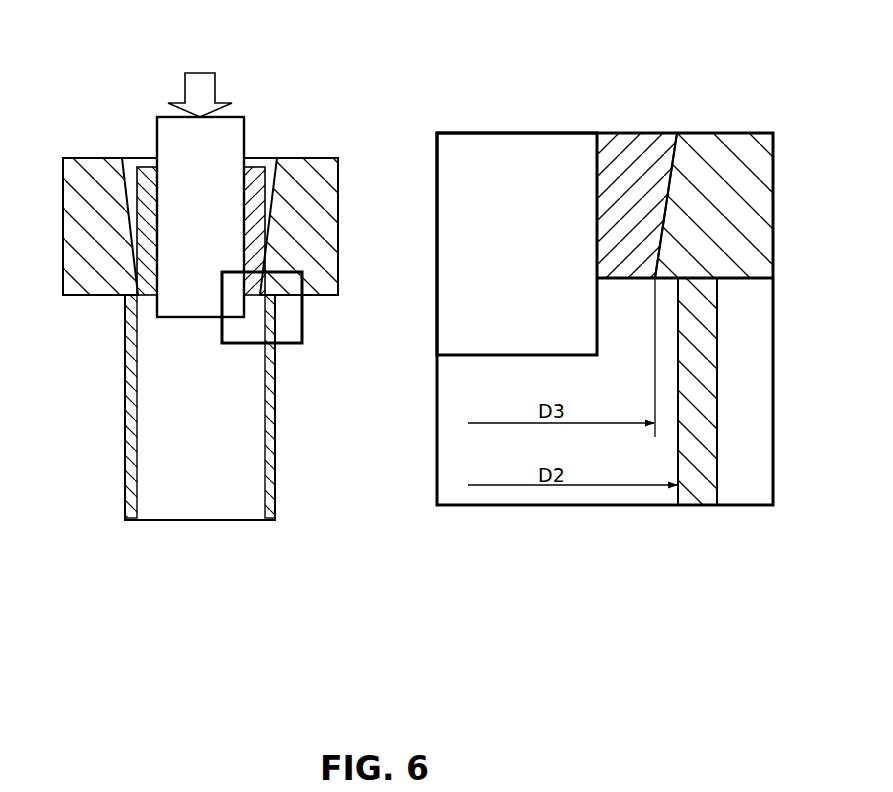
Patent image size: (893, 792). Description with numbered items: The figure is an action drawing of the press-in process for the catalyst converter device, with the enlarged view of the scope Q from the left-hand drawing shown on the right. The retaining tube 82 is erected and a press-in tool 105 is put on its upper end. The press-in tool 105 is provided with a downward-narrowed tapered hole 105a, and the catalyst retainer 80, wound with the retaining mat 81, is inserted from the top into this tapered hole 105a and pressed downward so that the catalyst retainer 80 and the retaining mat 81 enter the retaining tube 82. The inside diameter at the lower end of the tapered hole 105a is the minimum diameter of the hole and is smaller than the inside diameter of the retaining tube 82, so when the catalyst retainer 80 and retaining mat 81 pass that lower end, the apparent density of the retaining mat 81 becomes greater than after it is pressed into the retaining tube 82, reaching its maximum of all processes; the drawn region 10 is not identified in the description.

The press-in tool 105 is at (88, 153).
The tapered hole 105a is at (141, 161).
The catalyst retainer 80 is at (235, 127).
The retaining mat 81 is at (253, 158).
The retaining tube 82 is at (125, 392).
The workpiece wall 10 is at (663, 280).
The scope Q is at (274, 307).